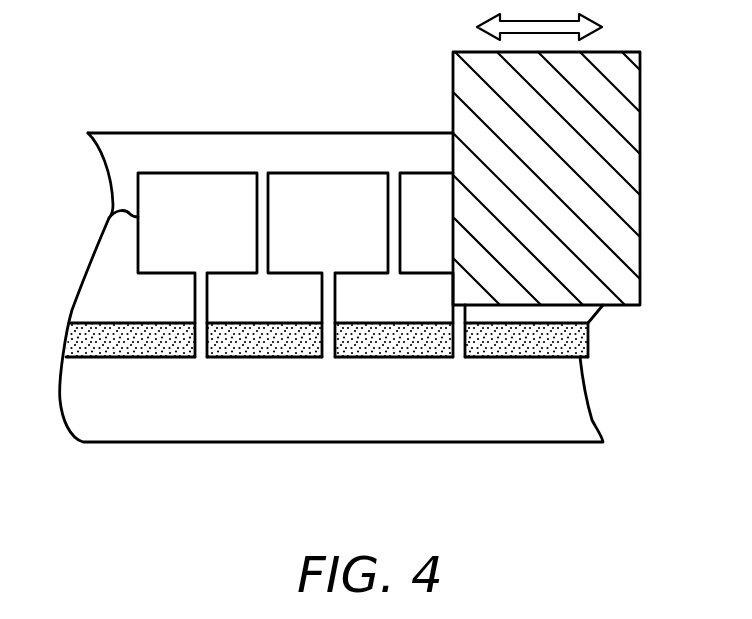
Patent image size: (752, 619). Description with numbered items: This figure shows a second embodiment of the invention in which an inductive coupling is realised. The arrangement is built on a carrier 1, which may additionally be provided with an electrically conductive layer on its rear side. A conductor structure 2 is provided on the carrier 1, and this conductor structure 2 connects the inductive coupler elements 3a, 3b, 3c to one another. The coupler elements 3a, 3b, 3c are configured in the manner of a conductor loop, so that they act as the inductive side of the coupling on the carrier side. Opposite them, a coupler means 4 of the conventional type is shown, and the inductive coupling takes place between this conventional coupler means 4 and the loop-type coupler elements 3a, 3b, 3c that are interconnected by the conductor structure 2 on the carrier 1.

The carrier 1 is at (390, 430).
The conductor structure 2 is at (592, 330).
The inductive coupler element 3a is at (107, 222).
The inductive coupler element 3b is at (305, 172).
The inductive coupler element 3c is at (411, 172).
The coupler means 4 is at (453, 57).